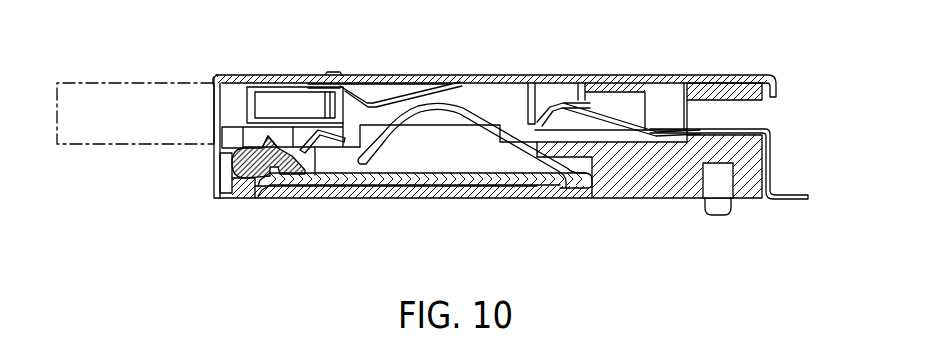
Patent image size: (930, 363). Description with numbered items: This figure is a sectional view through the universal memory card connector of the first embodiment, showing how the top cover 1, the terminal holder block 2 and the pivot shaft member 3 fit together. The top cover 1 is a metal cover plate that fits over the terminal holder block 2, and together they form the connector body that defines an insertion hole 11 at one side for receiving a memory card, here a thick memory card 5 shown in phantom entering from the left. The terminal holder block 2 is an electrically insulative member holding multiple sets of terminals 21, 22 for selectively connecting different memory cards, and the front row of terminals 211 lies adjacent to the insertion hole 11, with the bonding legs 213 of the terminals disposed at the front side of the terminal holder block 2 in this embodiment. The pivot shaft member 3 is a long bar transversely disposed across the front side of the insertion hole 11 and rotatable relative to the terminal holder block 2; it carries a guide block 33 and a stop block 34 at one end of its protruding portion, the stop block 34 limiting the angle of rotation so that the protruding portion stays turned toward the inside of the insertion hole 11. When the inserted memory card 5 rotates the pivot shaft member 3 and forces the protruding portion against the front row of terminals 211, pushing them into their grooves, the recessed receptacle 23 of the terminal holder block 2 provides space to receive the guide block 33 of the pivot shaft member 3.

The top cover 1 is at (609, 80).
The insertion hole 11 is at (209, 104).
The terminal holder block 2 is at (575, 199).
The terminals 21 is at (433, 88).
The front row of terminals 211 is at (304, 120).
The bonding legs 213 is at (232, 196).
The terminals 22 is at (553, 96).
The recessed receptacle 23 is at (318, 182).
The pivot shaft member 3 is at (235, 163).
The guide block 33 is at (300, 176).
The stop block 34 is at (265, 138).
The thick memory card 5 is at (88, 152).